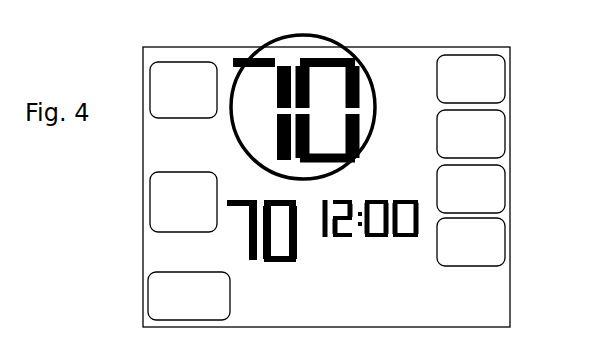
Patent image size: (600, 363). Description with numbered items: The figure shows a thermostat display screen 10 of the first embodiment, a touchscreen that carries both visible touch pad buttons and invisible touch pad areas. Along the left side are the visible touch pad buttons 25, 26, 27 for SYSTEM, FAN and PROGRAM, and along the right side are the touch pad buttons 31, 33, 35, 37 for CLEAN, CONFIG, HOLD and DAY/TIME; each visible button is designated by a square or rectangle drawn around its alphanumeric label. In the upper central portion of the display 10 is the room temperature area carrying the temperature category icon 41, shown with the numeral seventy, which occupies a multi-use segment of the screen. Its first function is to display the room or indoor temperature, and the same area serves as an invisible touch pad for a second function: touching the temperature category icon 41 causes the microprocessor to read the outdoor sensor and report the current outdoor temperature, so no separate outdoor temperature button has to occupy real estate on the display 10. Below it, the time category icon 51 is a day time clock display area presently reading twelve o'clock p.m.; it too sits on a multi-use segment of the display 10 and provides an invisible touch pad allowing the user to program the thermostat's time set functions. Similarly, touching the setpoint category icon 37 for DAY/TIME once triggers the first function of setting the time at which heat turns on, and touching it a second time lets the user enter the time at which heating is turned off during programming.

The display screen 10 is at (292, 292).
The touch pad button 25 is at (170, 72).
The touch pad button 26 is at (155, 190).
The touch pad button 27 is at (178, 300).
The touch pad button 31 is at (497, 79).
The touch pad button 33 is at (497, 138).
The touch pad button 35 is at (497, 188).
The setpoint category icon 37 is at (494, 253).
The temperature category icon 41 is at (234, 153).
The time category icon 51 is at (378, 256).